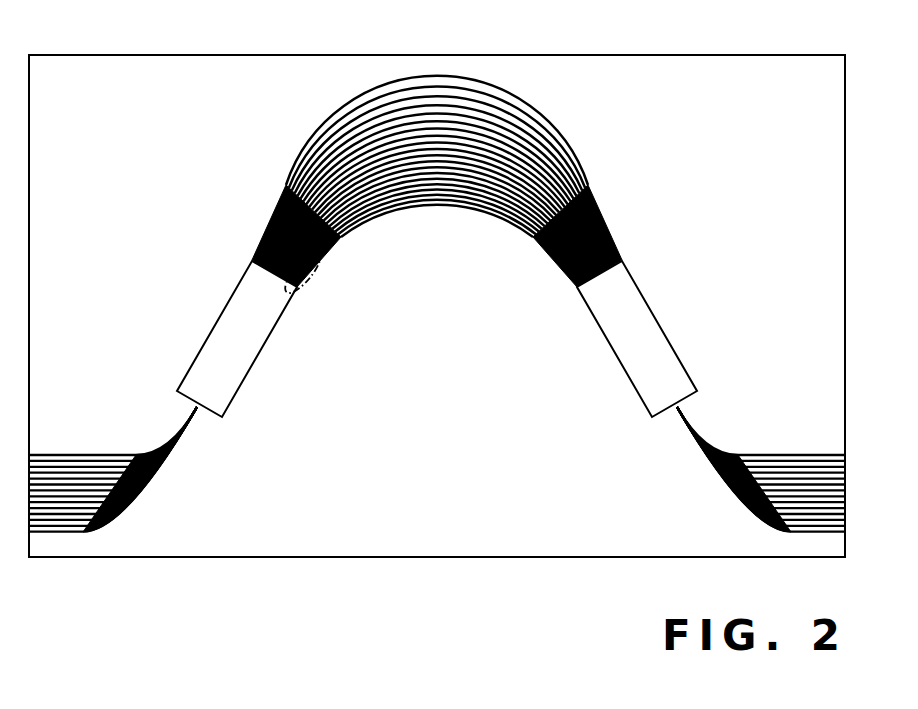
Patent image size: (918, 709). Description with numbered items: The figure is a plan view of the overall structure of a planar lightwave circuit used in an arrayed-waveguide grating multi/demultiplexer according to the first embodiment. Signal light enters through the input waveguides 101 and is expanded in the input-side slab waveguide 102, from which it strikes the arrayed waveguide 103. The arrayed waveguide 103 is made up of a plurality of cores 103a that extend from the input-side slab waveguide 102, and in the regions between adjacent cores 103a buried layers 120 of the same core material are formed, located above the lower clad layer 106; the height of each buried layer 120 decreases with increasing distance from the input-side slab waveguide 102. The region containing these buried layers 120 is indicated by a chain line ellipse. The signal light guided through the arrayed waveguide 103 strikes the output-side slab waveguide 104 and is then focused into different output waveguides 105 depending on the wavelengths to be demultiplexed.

The input waveguides 101 is at (76, 447).
The input-side slab waveguide 102 is at (255, 355).
The arrayed waveguide 103 is at (432, 222).
The cores 103a is at (346, 101).
The output-side slab waveguide 104 is at (622, 348).
The output waveguides 105 is at (800, 446).
The lower clad layer 106 is at (680, 60).
The buried layers 120 is at (310, 279).